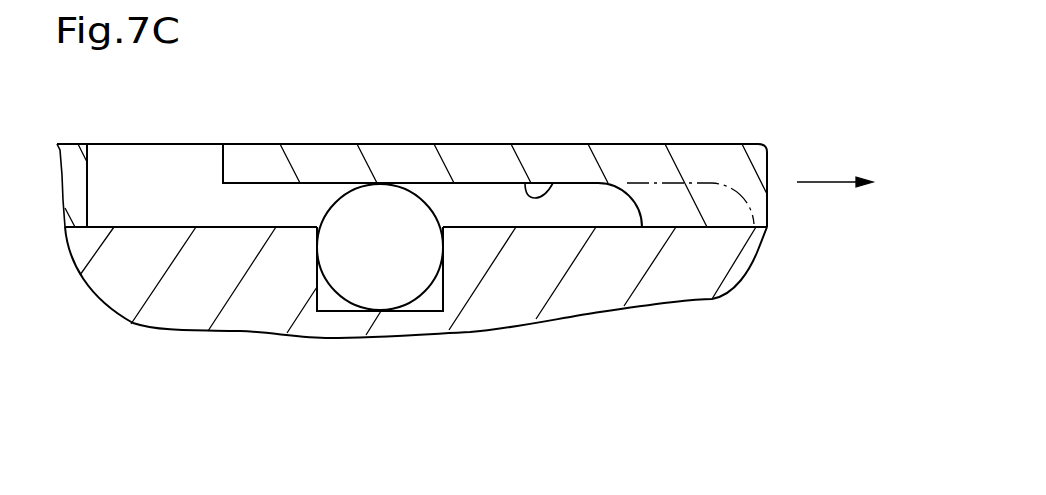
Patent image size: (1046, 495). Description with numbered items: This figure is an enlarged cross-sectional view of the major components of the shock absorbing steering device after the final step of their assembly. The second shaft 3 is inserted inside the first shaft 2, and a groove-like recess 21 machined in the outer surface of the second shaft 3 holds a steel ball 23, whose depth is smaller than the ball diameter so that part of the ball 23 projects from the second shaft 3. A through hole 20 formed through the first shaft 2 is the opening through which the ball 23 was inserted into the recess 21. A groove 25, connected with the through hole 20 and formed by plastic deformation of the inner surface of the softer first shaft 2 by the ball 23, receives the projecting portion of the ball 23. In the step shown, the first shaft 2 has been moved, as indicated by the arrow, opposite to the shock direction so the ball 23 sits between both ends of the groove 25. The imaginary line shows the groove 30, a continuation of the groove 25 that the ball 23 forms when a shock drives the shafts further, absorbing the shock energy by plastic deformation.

The first shaft 2 is at (494, 160).
The second shaft 3 is at (587, 303).
The through hole 20 is at (88, 168).
The recess 21 is at (330, 305).
The ball 23 is at (373, 210).
The groove 25 is at (553, 183).
The groove 30 is at (696, 182).